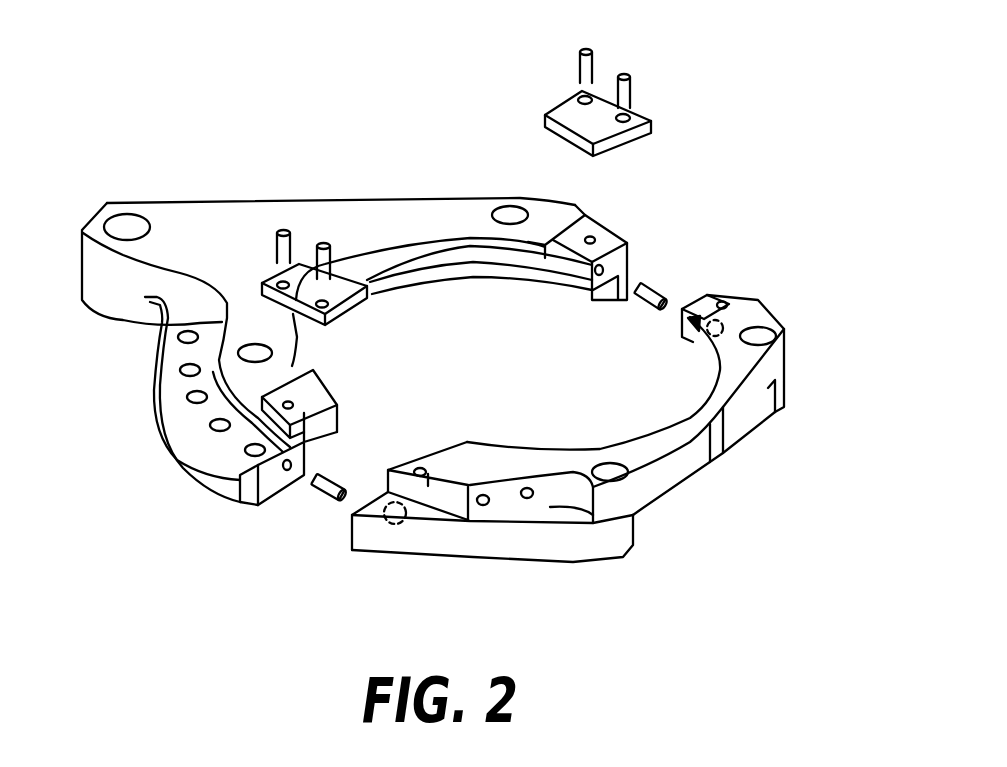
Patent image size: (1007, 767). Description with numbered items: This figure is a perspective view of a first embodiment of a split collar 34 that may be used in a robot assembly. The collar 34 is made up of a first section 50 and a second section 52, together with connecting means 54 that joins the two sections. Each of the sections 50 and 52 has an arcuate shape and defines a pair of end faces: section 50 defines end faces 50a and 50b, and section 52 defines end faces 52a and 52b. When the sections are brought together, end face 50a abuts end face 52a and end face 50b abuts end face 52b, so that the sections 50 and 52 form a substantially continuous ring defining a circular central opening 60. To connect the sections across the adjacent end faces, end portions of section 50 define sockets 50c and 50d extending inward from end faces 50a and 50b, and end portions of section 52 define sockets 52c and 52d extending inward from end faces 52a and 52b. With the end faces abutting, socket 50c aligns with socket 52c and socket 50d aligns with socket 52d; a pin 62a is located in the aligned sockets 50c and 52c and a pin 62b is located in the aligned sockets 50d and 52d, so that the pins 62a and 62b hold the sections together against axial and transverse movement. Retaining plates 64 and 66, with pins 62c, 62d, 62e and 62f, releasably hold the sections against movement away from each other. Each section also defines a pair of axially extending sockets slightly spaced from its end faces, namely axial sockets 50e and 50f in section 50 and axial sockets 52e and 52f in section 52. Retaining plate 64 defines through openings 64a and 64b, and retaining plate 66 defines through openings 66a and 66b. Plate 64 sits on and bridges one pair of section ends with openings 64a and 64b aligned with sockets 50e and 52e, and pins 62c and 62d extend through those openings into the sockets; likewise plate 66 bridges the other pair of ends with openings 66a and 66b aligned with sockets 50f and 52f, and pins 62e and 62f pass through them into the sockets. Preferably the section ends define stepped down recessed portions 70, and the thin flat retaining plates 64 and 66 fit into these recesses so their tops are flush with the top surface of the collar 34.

The collar 34 is at (128, 437).
The first section 50 is at (420, 214).
The end face 50a is at (628, 259).
The end face 50b is at (268, 484).
The socket 50c is at (594, 275).
The socket 50d is at (291, 466).
The axial socket 50e is at (595, 237).
The axial socket 50f is at (292, 404).
The second section 52 is at (690, 466).
The end face 52a is at (706, 293).
The end face 52b is at (350, 533).
The socket 52c is at (698, 337).
The socket 52d is at (395, 502).
The axial socket 52e is at (731, 300).
The axial socket 52f is at (426, 470).
The connecting means 54 is at (528, 52).
The central opening 60 is at (545, 385).
The pin 62a is at (646, 301).
The pin 62b is at (321, 500).
The pin 62c is at (594, 64).
The pin 62d is at (633, 87).
The pin 62e is at (276, 231).
The pin 62f is at (338, 256).
The retaining plate 64 is at (563, 143).
The through opening 64a is at (576, 100).
The through opening 64b is at (630, 117).
The retaining plate 66 is at (366, 298).
The through opening 66a is at (278, 282).
The through opening 66b is at (326, 305).
The recessed portion 70 is at (574, 236).